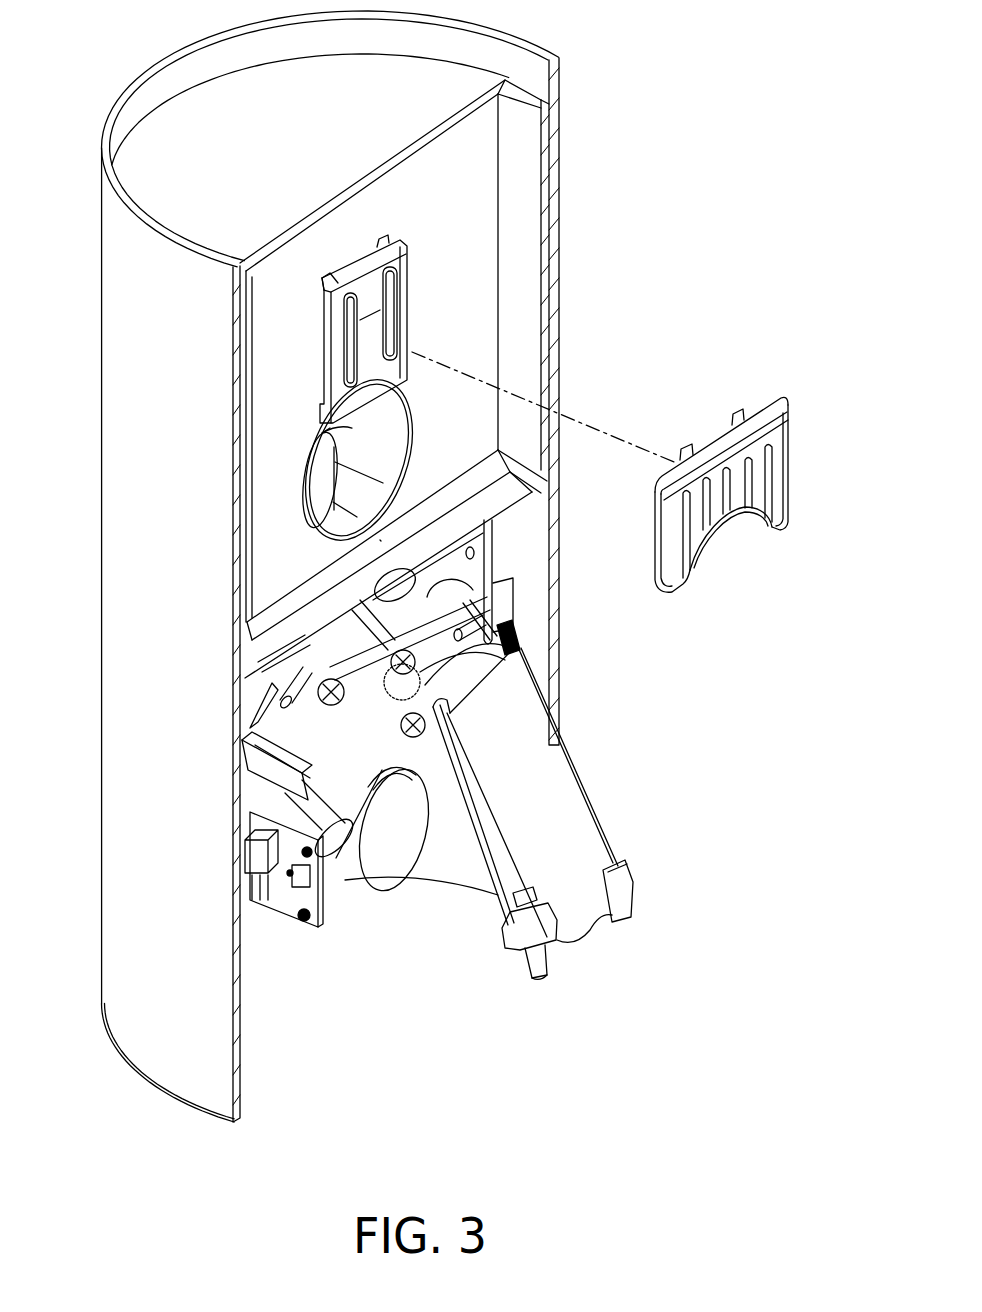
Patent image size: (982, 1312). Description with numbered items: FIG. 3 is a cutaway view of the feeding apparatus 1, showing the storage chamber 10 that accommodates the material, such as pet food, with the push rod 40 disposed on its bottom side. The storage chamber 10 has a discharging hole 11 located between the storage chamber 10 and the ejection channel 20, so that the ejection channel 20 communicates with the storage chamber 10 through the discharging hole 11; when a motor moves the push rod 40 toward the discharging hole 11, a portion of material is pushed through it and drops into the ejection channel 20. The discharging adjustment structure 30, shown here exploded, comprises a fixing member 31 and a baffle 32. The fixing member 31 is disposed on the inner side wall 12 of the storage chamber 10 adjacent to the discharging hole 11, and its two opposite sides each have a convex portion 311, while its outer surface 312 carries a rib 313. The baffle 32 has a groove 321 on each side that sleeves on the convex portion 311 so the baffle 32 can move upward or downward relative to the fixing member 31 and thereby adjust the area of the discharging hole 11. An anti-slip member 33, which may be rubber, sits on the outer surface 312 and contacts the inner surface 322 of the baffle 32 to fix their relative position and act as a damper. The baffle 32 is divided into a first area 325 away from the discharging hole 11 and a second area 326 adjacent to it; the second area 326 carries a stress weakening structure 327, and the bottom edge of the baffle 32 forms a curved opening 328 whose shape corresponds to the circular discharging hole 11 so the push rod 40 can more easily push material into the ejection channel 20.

The feeding apparatus 1 is at (76, 40).
The storage chamber 10 is at (519, 266).
The discharging hole 11 is at (412, 429).
The side wall 12 is at (483, 170).
The ejection channel 20 is at (317, 466).
The discharging adjustment structure 30 is at (752, 326).
The fixing member 31 is at (354, 262).
The convex portion 311 is at (336, 278).
The outer surface 312 is at (370, 333).
The rib 313 is at (407, 306).
The baffle 32 is at (777, 438).
The groove 321 is at (690, 443).
The inner surface 322 is at (722, 425).
The first area 325 is at (787, 399).
The second area 326 is at (778, 490).
The stress weakening structure 327 is at (695, 548).
The curved opening 328 is at (757, 519).
The anti-slip member 33 is at (399, 277).
The push rod 40 is at (563, 790).